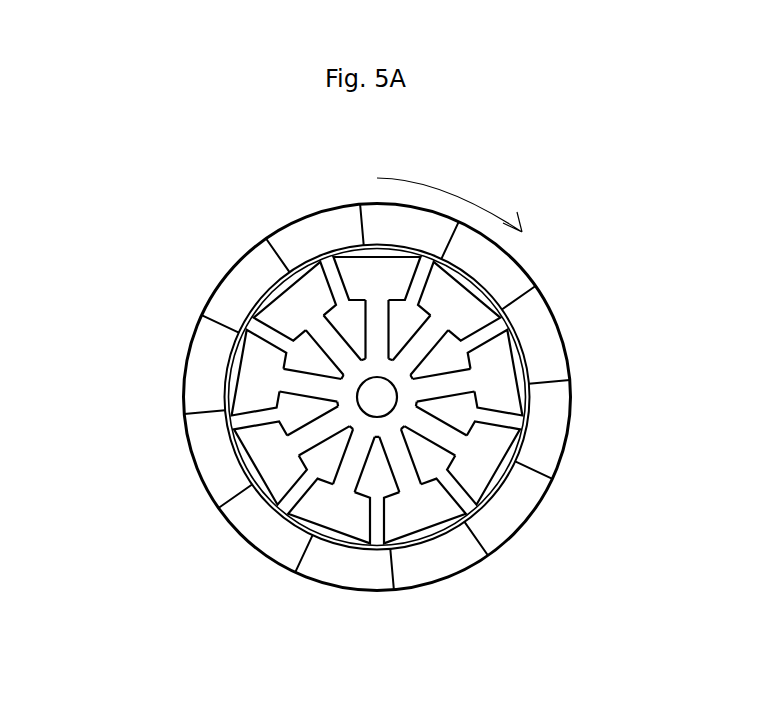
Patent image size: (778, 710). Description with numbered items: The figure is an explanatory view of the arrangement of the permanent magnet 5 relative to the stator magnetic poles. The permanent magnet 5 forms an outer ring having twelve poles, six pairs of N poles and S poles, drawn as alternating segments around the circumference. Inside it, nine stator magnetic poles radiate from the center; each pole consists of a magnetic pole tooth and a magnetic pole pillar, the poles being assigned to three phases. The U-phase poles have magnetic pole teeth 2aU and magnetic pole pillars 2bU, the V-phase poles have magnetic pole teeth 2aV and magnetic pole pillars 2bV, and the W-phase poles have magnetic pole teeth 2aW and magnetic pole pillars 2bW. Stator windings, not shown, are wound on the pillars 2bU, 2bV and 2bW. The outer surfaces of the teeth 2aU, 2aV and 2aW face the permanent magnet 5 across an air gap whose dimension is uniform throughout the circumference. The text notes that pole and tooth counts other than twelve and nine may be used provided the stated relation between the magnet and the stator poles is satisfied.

The permanent magnet 5 is at (540, 316).
The magnetic pole tooth 2aU is at (347, 265).
The magnetic pole pillar 2bU is at (390, 305).
The magnetic pole tooth 2aV is at (267, 317).
The magnetic pole pillar 2bV is at (297, 277).
The magnetic pole tooth 2aW is at (478, 292).
The magnetic pole pillar 2bW is at (430, 335).